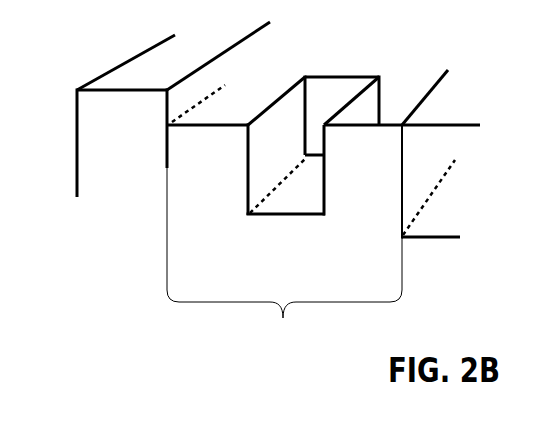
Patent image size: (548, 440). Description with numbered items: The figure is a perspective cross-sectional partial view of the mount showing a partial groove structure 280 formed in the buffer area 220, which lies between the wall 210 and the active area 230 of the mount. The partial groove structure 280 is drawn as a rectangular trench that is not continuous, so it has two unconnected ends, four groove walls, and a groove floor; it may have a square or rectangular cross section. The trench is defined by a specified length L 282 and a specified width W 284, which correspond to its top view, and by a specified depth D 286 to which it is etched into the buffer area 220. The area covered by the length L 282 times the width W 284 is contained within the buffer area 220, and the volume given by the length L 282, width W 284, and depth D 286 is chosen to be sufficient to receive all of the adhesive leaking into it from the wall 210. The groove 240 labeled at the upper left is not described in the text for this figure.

The wall 210 is at (97, 143).
The Groove 240 is at (19, 23).
The partial groove structure 280 is at (272, 217).
The length L 282 is at (240, 120).
The width W 284 is at (308, 62).
The depth D 286 is at (238, 215).
The active area 230 is at (437, 153).
The buffer area 220 is at (284, 270).